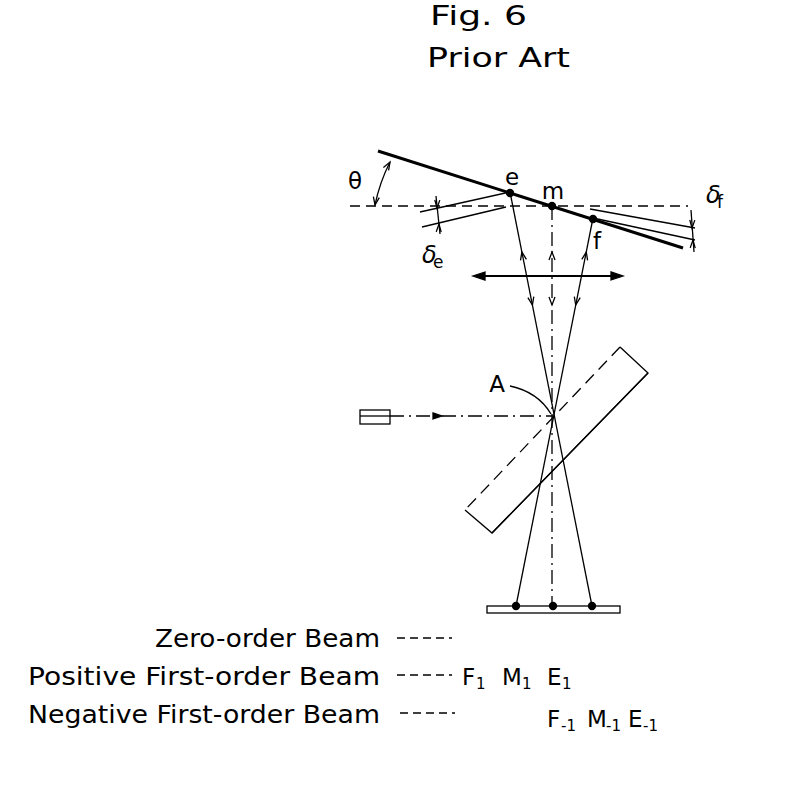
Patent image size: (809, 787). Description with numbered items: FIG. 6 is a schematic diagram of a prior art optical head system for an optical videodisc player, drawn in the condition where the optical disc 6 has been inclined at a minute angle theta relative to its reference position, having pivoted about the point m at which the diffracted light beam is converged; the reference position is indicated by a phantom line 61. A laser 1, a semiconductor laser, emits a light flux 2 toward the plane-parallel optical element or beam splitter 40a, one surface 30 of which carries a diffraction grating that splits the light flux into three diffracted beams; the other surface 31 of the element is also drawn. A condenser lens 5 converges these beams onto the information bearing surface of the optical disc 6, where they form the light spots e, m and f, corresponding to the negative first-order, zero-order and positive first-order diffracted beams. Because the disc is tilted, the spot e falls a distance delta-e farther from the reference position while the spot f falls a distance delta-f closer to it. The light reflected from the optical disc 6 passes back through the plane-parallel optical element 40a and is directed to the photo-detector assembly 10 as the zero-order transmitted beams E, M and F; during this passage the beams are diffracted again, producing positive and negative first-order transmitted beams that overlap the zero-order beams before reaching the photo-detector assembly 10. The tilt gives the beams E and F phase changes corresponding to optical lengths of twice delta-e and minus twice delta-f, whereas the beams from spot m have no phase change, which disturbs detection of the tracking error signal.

The laser 1 is at (370, 428).
The light flux 2 is at (410, 428).
The condenser lens 5 is at (627, 277).
The optical disc 6 is at (428, 167).
The reference plane of disc surface 61 is at (660, 207).
The photo-detector assembly 10 is at (617, 605).
The surface of the beam splitter 30 is at (596, 420).
The half-mirror surface of beam splitter 31 is at (620, 402).
The plane-parallel optical element or beam splitter 40a is at (638, 363).